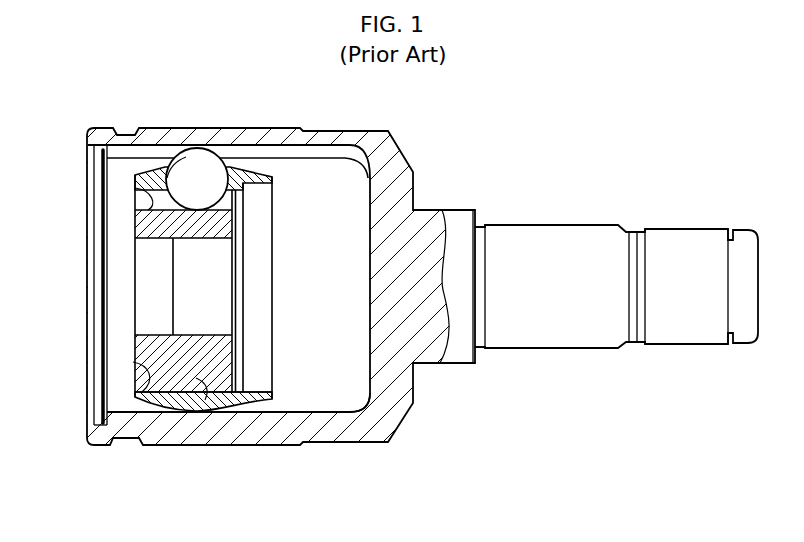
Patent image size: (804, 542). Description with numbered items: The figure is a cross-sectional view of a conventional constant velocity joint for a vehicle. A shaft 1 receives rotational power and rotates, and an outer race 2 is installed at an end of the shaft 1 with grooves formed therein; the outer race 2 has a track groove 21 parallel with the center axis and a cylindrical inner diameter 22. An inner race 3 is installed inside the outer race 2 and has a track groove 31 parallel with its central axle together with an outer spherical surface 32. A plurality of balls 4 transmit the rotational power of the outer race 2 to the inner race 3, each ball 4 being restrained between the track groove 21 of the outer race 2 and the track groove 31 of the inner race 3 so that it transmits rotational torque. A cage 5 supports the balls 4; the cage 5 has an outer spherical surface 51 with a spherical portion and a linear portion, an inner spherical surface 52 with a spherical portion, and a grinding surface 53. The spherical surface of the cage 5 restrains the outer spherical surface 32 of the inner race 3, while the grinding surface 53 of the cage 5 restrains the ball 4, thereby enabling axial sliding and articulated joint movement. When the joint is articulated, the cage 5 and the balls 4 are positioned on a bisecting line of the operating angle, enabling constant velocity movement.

The shaft 1 is at (570, 237).
The outer race 2 is at (393, 153).
The track groove 21 is at (315, 150).
The cylindrical inner diameter 22 is at (295, 408).
The inner race 3 is at (133, 347).
The track groove 31 is at (135, 190).
The outer spherical surface 32 is at (190, 392).
The ball 4 is at (205, 160).
The cage 5 is at (243, 172).
The outer spherical surface 51 is at (151, 404).
The inner spherical surface 52 is at (133, 362).
The grinding surface 53 is at (181, 172).